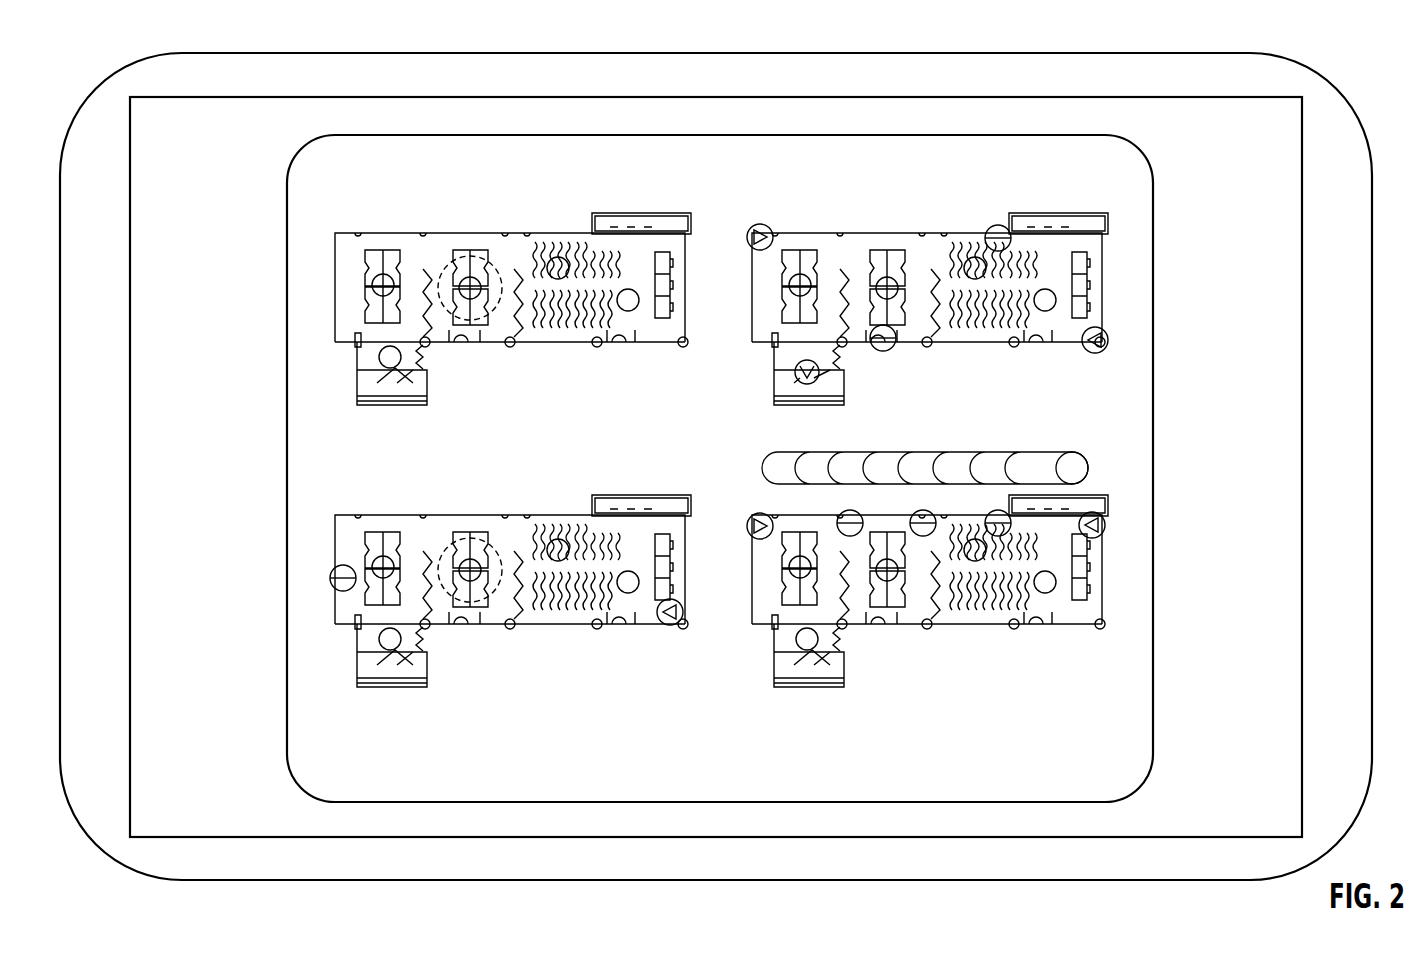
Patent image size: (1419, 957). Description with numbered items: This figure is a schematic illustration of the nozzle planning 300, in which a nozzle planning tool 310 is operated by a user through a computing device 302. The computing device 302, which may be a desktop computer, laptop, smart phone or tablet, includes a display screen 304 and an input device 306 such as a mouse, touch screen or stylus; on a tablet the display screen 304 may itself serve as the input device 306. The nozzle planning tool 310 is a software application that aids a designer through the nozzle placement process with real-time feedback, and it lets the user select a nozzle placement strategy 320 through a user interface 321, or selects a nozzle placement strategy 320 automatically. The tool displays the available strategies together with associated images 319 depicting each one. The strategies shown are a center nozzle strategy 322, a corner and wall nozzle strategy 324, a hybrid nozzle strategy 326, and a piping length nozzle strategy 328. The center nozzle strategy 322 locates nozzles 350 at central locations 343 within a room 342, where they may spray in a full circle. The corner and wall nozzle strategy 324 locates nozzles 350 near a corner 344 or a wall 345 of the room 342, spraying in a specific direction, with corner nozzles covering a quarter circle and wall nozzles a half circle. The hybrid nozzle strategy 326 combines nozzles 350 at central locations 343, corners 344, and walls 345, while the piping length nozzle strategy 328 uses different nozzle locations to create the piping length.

The nozzle planning 300 is at (73, 96).
The computing device 302 is at (1308, 70).
The display screen 304 is at (1105, 120).
The input device 306 is at (720, 411).
The nozzle planning tool 310 is at (255, 122).
The images 319 is at (1010, 193).
The nozzle placement strategy 320 is at (568, 158).
The user interface 321 is at (675, 135).
The center nozzle strategy 322 is at (380, 218).
The corner and wall nozzle strategy 324 is at (747, 246).
The hybrid nozzle strategy 326 is at (330, 518).
The piping length nozzle strategy 328 is at (748, 528).
The room 342 is at (651, 338).
The central location 343 is at (481, 257).
The corner 344 is at (1105, 350).
The wall 345 is at (912, 345).
The nozzle 350 is at (477, 293).